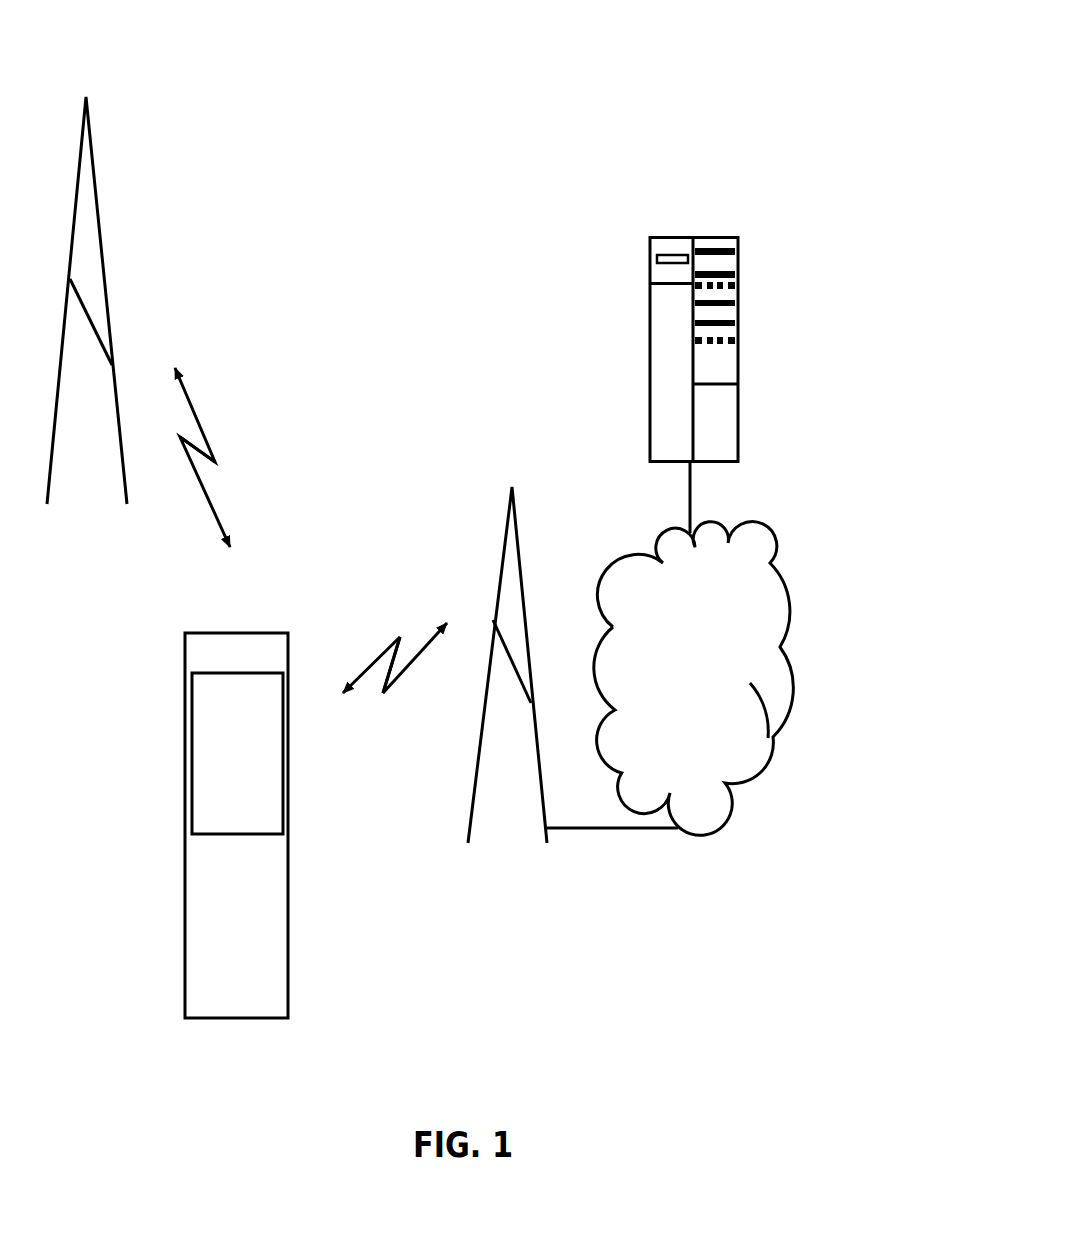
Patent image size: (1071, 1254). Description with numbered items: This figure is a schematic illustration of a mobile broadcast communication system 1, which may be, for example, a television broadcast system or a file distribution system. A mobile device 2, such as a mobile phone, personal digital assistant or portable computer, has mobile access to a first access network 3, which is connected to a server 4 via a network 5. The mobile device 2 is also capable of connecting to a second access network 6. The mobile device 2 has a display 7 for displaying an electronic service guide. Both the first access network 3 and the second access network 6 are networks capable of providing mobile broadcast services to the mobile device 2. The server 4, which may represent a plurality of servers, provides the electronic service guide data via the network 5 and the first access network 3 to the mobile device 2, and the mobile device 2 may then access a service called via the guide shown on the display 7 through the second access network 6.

The mobile broadcast communication system 1 is at (790, 78).
The mobile device 2 is at (288, 982).
The first access network 3 is at (500, 505).
The server 4 is at (658, 362).
The network 5 is at (670, 649).
The second access network 6 is at (92, 139).
The display 7 is at (272, 775).